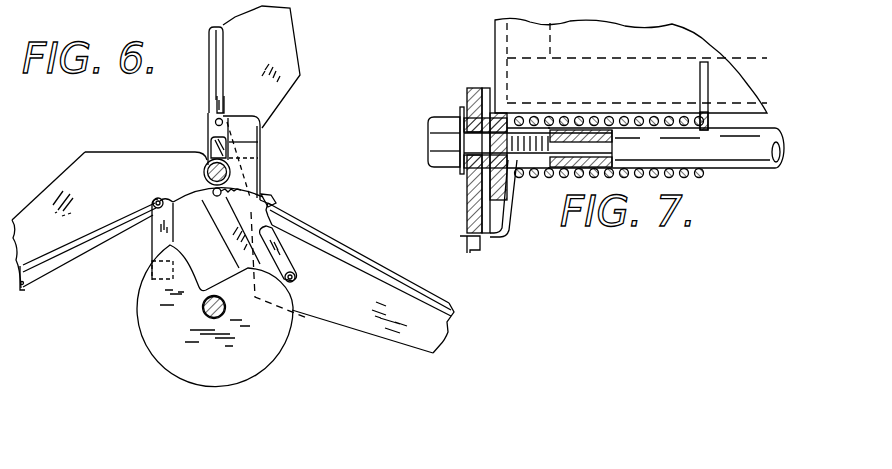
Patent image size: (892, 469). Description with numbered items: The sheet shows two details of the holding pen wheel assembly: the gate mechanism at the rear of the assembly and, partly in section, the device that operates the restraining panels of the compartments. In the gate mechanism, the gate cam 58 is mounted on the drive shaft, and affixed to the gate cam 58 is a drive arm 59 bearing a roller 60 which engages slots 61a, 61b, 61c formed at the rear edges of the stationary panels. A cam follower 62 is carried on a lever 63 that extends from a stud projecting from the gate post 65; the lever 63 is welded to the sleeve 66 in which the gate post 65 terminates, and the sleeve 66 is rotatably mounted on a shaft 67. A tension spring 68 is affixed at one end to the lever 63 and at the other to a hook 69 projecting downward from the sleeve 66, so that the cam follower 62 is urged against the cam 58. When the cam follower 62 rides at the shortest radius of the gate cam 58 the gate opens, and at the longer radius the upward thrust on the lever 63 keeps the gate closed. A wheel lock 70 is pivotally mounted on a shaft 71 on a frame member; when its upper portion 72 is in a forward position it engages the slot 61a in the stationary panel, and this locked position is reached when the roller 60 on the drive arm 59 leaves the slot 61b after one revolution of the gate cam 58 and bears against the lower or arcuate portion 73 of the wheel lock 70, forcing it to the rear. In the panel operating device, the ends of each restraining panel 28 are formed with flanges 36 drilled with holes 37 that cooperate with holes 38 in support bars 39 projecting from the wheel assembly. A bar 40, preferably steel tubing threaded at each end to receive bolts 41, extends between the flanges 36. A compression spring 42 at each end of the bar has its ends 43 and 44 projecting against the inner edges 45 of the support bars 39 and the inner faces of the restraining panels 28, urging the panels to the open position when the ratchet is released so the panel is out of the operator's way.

In FIG. 6, the gate cam 58 is at (273, 337).
In FIG. 6, the drive arm 59 is at (152, 236).
In FIG. 6, the roller 60 is at (154, 200).
In FIG. 6, the slot 61a is at (223, 55).
In FIG. 6, the slot 61b is at (322, 238).
In FIG. 6, the slot 61c is at (60, 262).
In FIG. 6, the cam follower 62 is at (299, 288).
In FIG. 6, the lever 63 is at (286, 253).
In FIG. 6, the gate post 65 is at (212, 121).
In FIG. 6, the sleeve 66 is at (206, 150).
In FIG. 6, the shaft 67 is at (229, 176).
In FIG. 6, the tension spring 68 is at (228, 206).
In FIG. 6, the hook 69 is at (203, 186).
In FIG. 6, the wheel lock 70 is at (250, 133).
In FIG. 6, the shaft 71 is at (262, 151).
In FIG. 6, the upper portion of the wheel lock 72 is at (224, 102).
In FIG. 6, the arcuate portion of the wheel lock 73 is at (271, 197).
In FIG. 7, the restraining panel 28 is at (495, 38).
In FIG. 7, the flange 36 is at (502, 182).
In FIG. 7, the hole 37 is at (503, 112).
In FIG. 7, the hole 38 is at (470, 112).
In FIG. 7, the support bar 39 is at (471, 207).
In FIG. 7, the bar 40 is at (760, 165).
In FIG. 7, the bolt 41 is at (455, 147).
In FIG. 7, the compression spring 42 is at (677, 176).
In FIG. 7, the spring end 43 is at (491, 240).
In FIG. 7, the spring end 44 is at (710, 78).
In FIG. 7, the inner edge of the support bar 45 is at (468, 247).